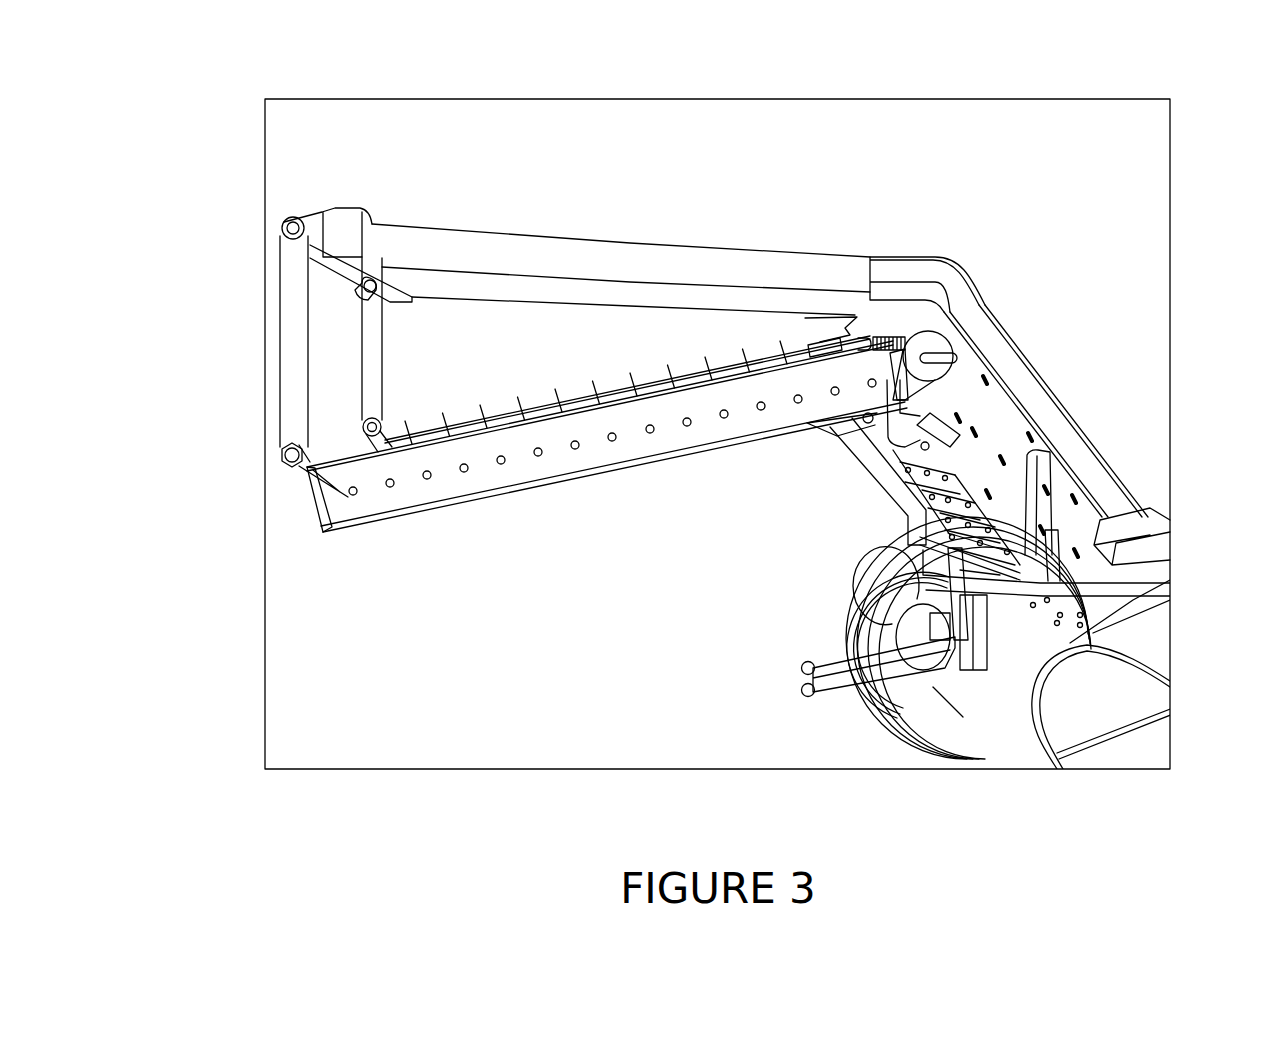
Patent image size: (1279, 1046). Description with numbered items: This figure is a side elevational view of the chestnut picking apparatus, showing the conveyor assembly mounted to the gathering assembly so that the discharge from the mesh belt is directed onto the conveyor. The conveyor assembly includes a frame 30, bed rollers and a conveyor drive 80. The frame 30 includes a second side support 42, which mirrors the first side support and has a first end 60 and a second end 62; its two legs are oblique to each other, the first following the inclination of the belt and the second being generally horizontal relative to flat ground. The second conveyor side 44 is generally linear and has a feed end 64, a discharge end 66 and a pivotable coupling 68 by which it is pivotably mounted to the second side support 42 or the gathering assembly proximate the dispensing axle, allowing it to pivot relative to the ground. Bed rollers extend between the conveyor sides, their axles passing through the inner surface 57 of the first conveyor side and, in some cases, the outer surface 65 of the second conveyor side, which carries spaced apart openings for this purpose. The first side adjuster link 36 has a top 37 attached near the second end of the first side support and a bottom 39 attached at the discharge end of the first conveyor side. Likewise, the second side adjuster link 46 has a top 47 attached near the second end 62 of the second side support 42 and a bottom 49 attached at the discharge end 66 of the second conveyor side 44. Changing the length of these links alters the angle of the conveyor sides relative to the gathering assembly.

The frame 30 is at (286, 299).
The first side adjuster link 36 is at (415, 354).
The top 37 is at (386, 300).
The bottom 39 is at (376, 423).
The second side support 42 is at (706, 250).
The second conveyor side 44 is at (553, 473).
The second side adjuster link 46 is at (288, 370).
The top 47 is at (280, 228).
The bottom 49 is at (280, 455).
The inner surface 57 is at (722, 377).
The first end 60 is at (1102, 466).
The second end 62 is at (344, 198).
The feed end 64 is at (858, 375).
The outer surface 65 is at (350, 496).
The discharge end 66 is at (298, 492).
The pivotable coupling 68 is at (913, 410).
The conveyor drive 80 is at (957, 348).